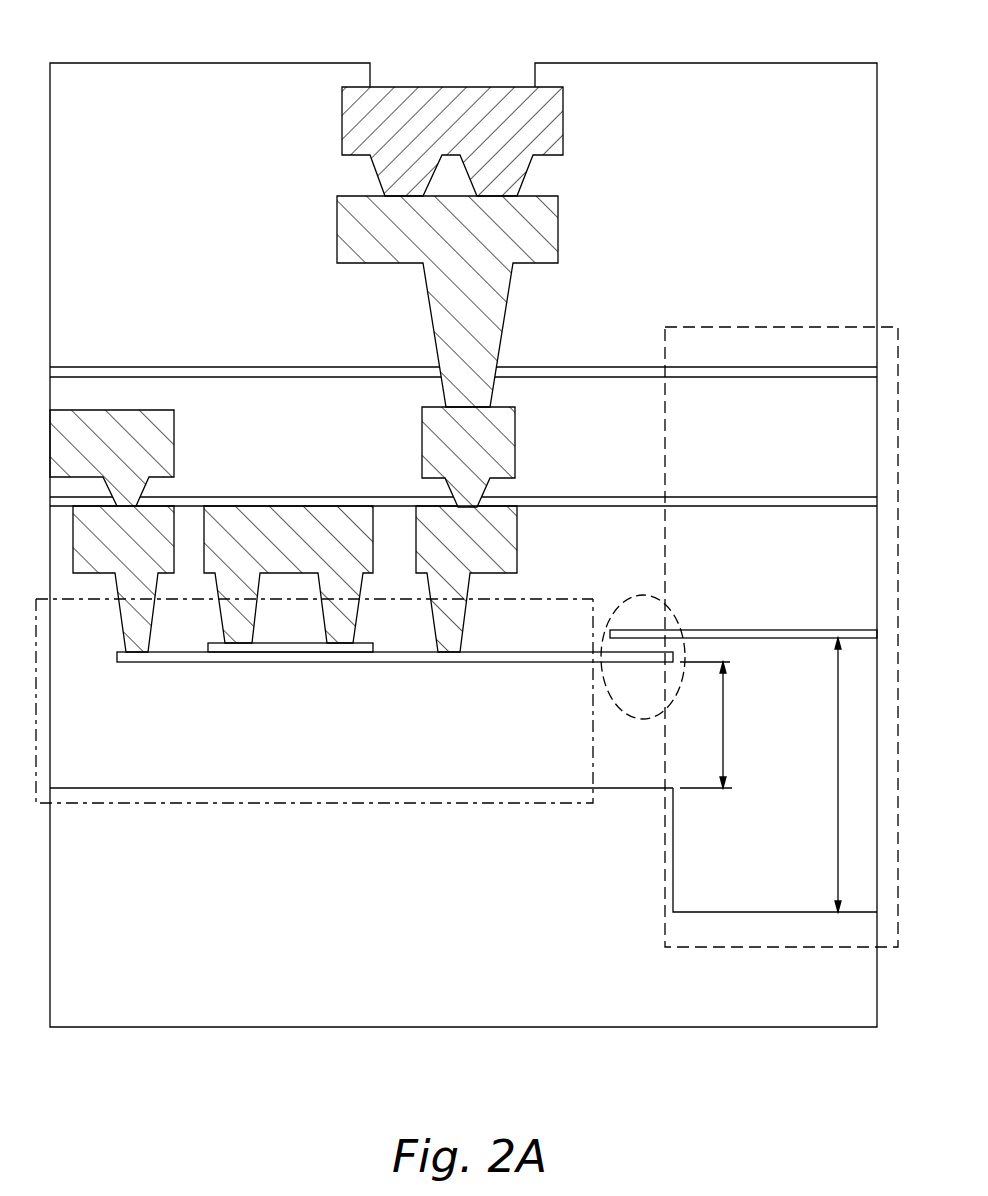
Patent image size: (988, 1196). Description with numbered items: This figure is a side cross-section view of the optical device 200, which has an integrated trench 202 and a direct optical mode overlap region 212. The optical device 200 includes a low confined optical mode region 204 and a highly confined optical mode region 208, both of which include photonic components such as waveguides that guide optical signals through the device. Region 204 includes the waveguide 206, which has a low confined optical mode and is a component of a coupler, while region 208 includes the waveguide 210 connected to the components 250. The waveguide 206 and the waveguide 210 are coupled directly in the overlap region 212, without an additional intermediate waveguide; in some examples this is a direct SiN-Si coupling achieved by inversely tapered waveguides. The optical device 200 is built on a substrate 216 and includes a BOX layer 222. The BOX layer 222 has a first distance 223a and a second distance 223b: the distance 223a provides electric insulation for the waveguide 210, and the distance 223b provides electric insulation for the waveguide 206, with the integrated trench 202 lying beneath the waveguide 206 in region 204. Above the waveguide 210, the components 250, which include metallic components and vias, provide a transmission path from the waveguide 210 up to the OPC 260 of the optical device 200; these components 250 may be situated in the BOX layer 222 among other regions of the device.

The optical device 200 is at (148, 31).
The integrated trench 202 is at (793, 851).
The low confined optical mode region 204 is at (780, 327).
The waveguide 206 is at (713, 630).
The highly confined optical mode region 208 is at (568, 599).
The waveguide 210 is at (195, 662).
The direct optical mode overlap region 212 is at (645, 595).
The substrate 216 is at (308, 941).
The BOX layer 222 is at (308, 757).
The first distance 223a is at (723, 712).
The second distance 223b is at (838, 752).
The components 250 is at (428, 441).
The OPC 260 is at (472, 133).